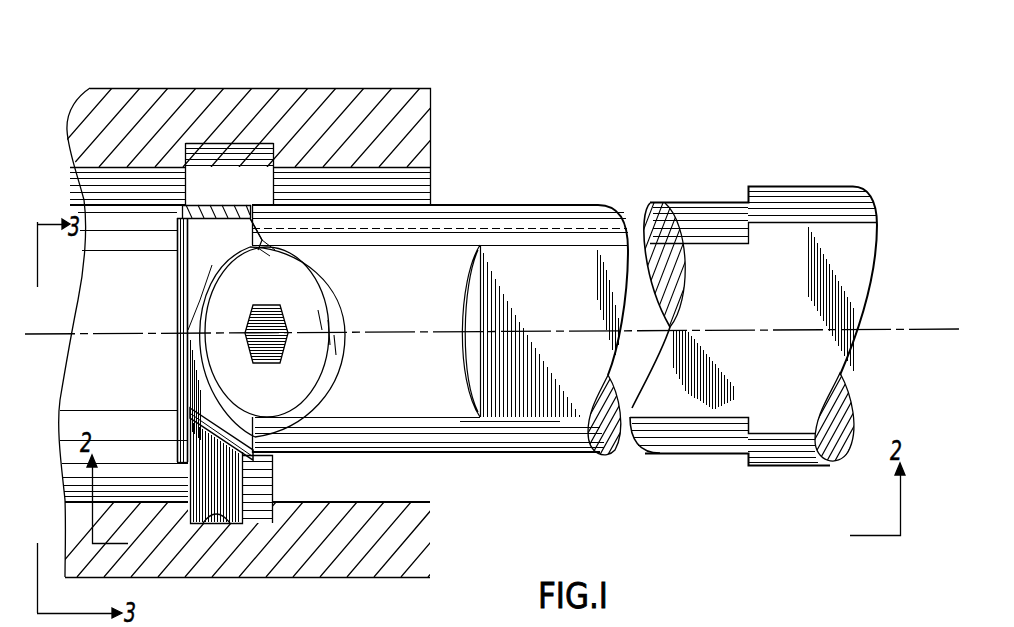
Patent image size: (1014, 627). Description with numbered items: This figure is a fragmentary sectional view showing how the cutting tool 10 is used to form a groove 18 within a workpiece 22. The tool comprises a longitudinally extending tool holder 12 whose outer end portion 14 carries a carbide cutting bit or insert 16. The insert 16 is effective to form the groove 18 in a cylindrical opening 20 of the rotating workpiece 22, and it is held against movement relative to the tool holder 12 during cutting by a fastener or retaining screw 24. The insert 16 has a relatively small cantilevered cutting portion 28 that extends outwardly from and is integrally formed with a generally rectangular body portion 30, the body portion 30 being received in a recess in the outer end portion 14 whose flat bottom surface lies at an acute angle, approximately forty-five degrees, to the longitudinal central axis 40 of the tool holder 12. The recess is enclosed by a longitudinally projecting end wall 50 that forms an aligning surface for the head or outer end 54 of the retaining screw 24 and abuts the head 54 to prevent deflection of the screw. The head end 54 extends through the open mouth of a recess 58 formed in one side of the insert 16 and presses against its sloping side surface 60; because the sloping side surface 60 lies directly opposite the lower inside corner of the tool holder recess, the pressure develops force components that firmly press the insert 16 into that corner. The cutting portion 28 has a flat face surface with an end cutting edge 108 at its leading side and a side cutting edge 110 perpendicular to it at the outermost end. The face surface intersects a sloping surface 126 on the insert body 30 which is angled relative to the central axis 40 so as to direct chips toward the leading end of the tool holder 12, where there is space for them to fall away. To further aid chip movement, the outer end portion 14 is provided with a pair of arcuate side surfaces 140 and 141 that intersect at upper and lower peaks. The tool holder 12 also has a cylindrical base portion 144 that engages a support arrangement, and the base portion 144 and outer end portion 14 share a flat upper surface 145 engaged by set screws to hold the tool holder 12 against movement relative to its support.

The cutting tool 10 is at (686, 106).
The tool holder 12 is at (749, 288).
The outer end portion 14 is at (469, 275).
The carbide cutting bit or insert 16 is at (168, 371).
The groove 18 is at (226, 145).
The cylindrical opening 20 is at (144, 160).
The workpiece 22 is at (312, 90).
The retaining screw 24 is at (304, 327).
The cantilevered cutting portion 28 is at (253, 489).
The body portion 30 is at (177, 268).
The longitudinal central axis 40 is at (919, 290).
The end wall 50 is at (300, 316).
The head of the retaining screw 54 is at (310, 372).
The insert recess 58 is at (265, 246).
The sloping side surface 60 is at (203, 348).
The end cutting edge 108 is at (188, 478).
The side cutting edge 110 is at (213, 518).
The sloping surface 126 is at (192, 428).
The arcuate side surface 140 is at (455, 215).
The arcuate side surface 141 is at (473, 430).
The cylindrical base portion 144 is at (855, 200).
The flat upper surface 145 is at (845, 376).